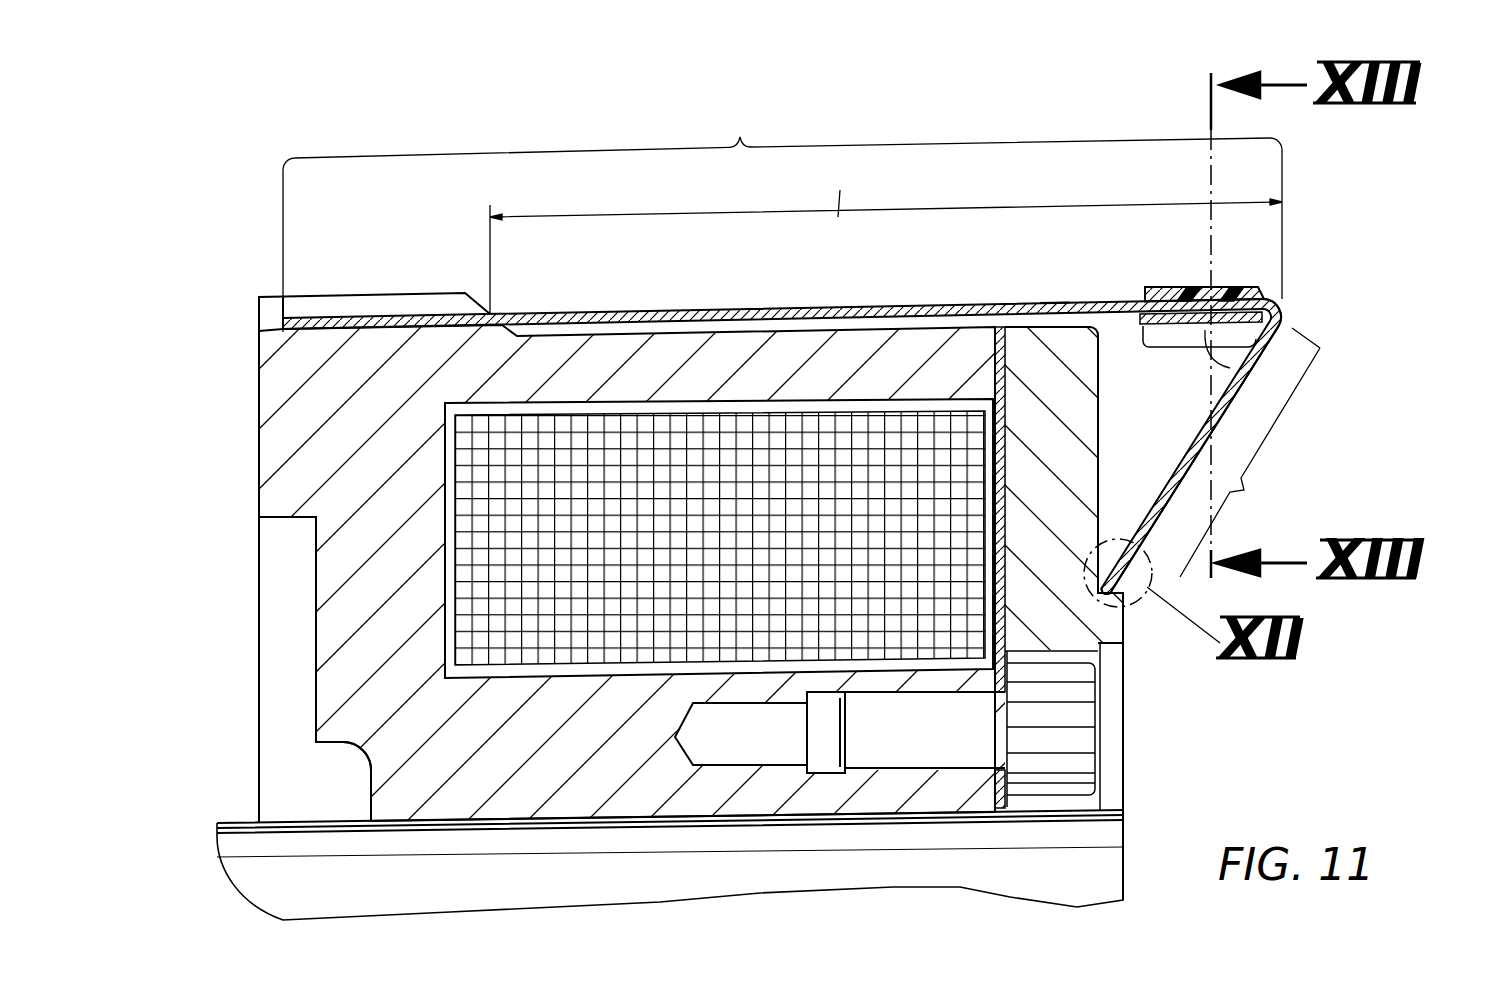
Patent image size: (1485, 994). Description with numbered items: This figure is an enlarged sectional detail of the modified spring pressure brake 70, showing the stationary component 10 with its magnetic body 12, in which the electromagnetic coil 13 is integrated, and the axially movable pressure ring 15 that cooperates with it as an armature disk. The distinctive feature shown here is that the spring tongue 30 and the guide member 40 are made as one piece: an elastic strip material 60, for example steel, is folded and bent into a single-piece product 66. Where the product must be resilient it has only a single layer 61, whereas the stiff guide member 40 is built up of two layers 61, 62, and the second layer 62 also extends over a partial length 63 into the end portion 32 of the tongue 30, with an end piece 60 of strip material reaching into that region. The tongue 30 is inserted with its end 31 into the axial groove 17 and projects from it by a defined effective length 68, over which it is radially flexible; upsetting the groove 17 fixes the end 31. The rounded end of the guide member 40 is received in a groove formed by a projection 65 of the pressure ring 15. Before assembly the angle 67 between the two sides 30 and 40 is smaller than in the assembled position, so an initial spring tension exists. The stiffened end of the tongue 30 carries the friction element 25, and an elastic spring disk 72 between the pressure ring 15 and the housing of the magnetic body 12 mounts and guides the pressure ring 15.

The stationary component 10 is at (428, 830).
The magnetic body 12 is at (765, 363).
The coil 13 is at (630, 447).
The pressure ring 15 is at (1098, 480).
The axial groove 17 is at (307, 310).
The friction element 25 is at (1194, 293).
The spring tongue 30 is at (782, 217).
The end of the tongue 31 is at (388, 317).
The end portion of the tongue 32 is at (1284, 300).
The guide member 40 is at (1250, 452).
The strip material 60 is at (283, 322).
The first layer 61 is at (1055, 302).
The second layer 62 is at (1135, 304).
The partial length 63 is at (1186, 347).
The projection 65 is at (1105, 615).
The folded and bent product 66 is at (1290, 322).
The angle 67 is at (1216, 378).
The effective length 68 is at (886, 238).
The spring pressure brake 70 is at (1372, 220).
The spring disk 72 is at (999, 322).